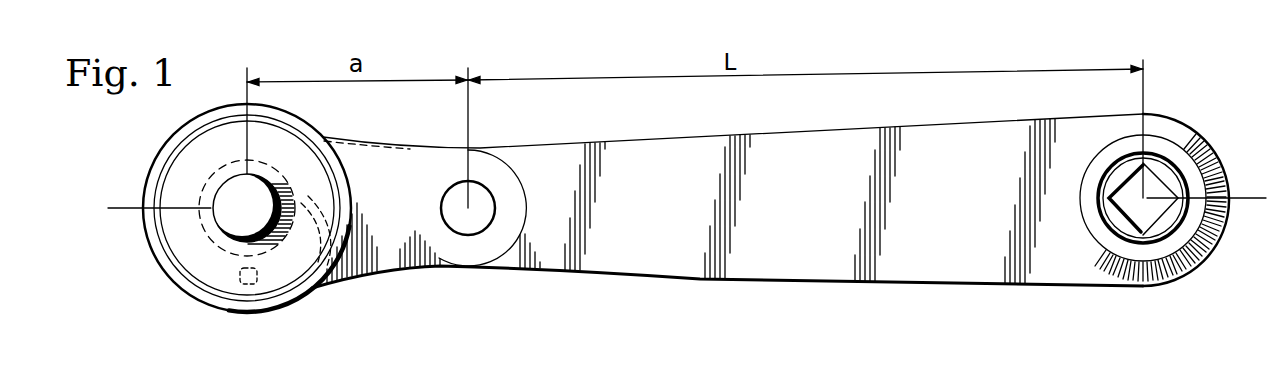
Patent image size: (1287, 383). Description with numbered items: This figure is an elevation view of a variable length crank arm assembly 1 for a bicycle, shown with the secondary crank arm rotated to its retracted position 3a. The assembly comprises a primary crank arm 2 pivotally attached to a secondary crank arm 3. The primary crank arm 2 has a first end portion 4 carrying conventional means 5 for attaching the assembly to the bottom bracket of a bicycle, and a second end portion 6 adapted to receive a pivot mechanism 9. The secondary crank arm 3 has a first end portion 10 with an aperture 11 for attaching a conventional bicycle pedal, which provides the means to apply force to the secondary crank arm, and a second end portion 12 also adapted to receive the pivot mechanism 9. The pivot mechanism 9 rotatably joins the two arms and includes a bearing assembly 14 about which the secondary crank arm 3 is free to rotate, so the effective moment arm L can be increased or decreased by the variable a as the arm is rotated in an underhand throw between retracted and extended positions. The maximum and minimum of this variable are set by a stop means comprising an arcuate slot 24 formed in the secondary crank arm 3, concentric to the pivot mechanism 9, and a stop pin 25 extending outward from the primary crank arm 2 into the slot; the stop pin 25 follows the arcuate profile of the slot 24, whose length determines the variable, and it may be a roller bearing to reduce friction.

The variable length crank arm assembly 1 is at (583, 283).
The primary crank arm 2 is at (842, 263).
The secondary crank arm 3 is at (113, 206).
The retracted position 3a is at (375, 218).
The first end portion 4 is at (1193, 131).
The conventional means for attaching 5 is at (1140, 213).
The second end portion 6 is at (340, 140).
The pivot mechanism 9 is at (190, 243).
The first end portion 10 is at (503, 170).
The aperture 11 is at (458, 205).
The second end portion 12 is at (150, 242).
The bearing assembly 14 is at (207, 183).
The arcuate slot 24 is at (313, 273).
The stop pin 25 is at (247, 287).